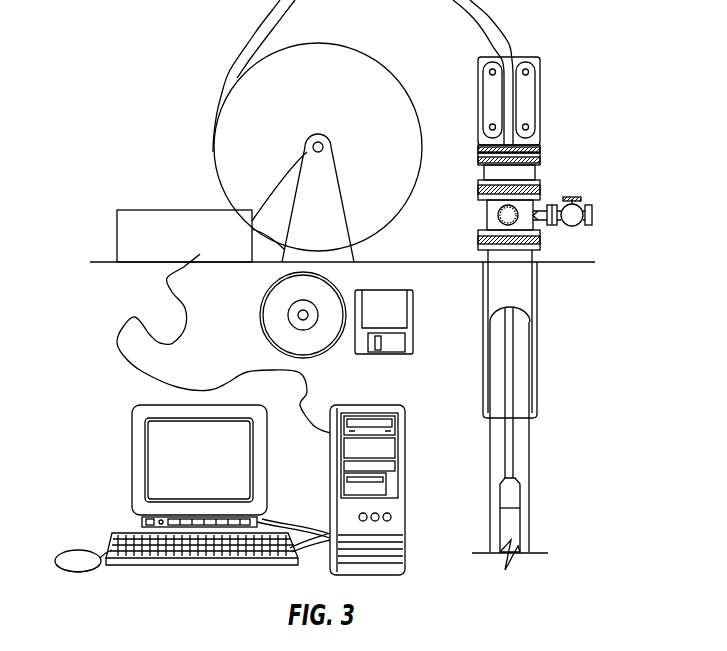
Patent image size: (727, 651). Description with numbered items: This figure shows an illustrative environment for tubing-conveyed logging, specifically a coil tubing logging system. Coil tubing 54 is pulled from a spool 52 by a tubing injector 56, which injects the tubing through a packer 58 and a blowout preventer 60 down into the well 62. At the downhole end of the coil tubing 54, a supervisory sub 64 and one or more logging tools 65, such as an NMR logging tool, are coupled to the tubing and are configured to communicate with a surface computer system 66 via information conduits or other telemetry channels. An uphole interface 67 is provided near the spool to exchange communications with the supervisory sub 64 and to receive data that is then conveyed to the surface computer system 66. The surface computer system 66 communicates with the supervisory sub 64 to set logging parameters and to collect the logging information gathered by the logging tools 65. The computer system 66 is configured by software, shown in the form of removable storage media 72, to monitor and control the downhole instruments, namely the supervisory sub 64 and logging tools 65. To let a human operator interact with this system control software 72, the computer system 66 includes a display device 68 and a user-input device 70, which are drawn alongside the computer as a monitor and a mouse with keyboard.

The spool 52 is at (343, 107).
The coil tubing 54 is at (255, 35).
The tubing injector 56 is at (540, 100).
The packer 58 is at (537, 172).
The blowout preventer 60 is at (487, 213).
The well 62 is at (533, 305).
The supervisory sub 64 is at (521, 497).
The logging tool 65 is at (521, 535).
The surface computer system 66 is at (406, 489).
The uphole interface 67 is at (148, 210).
The display device 68 is at (132, 462).
The user-input device 70 is at (108, 549).
The removable storage media 72 is at (262, 315).